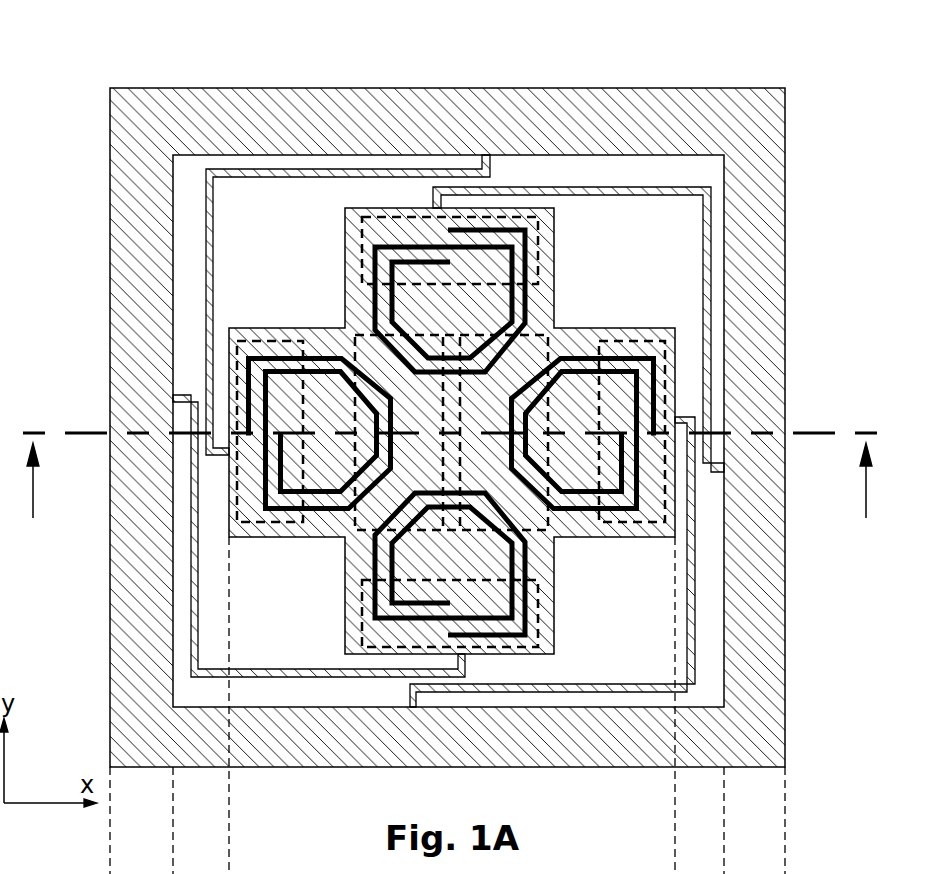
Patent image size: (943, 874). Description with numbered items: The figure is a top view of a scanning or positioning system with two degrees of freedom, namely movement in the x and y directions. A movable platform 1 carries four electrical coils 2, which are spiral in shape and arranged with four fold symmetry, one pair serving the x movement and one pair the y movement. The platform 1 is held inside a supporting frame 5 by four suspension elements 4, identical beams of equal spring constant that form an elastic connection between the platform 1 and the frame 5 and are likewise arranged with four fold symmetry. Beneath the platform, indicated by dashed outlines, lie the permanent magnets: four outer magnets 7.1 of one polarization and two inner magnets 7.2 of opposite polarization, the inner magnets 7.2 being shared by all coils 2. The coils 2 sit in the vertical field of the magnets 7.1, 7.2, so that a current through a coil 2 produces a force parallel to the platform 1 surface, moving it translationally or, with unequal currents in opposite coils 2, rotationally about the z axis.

The movable platform 1 is at (384, 196).
The electrical coils 2 is at (530, 303).
The suspension elements 4 is at (297, 169).
The supporting frame 5 is at (757, 204).
The outer permanent magnets 7.1 is at (362, 233).
The inner permanent magnets 7.2 is at (347, 328).